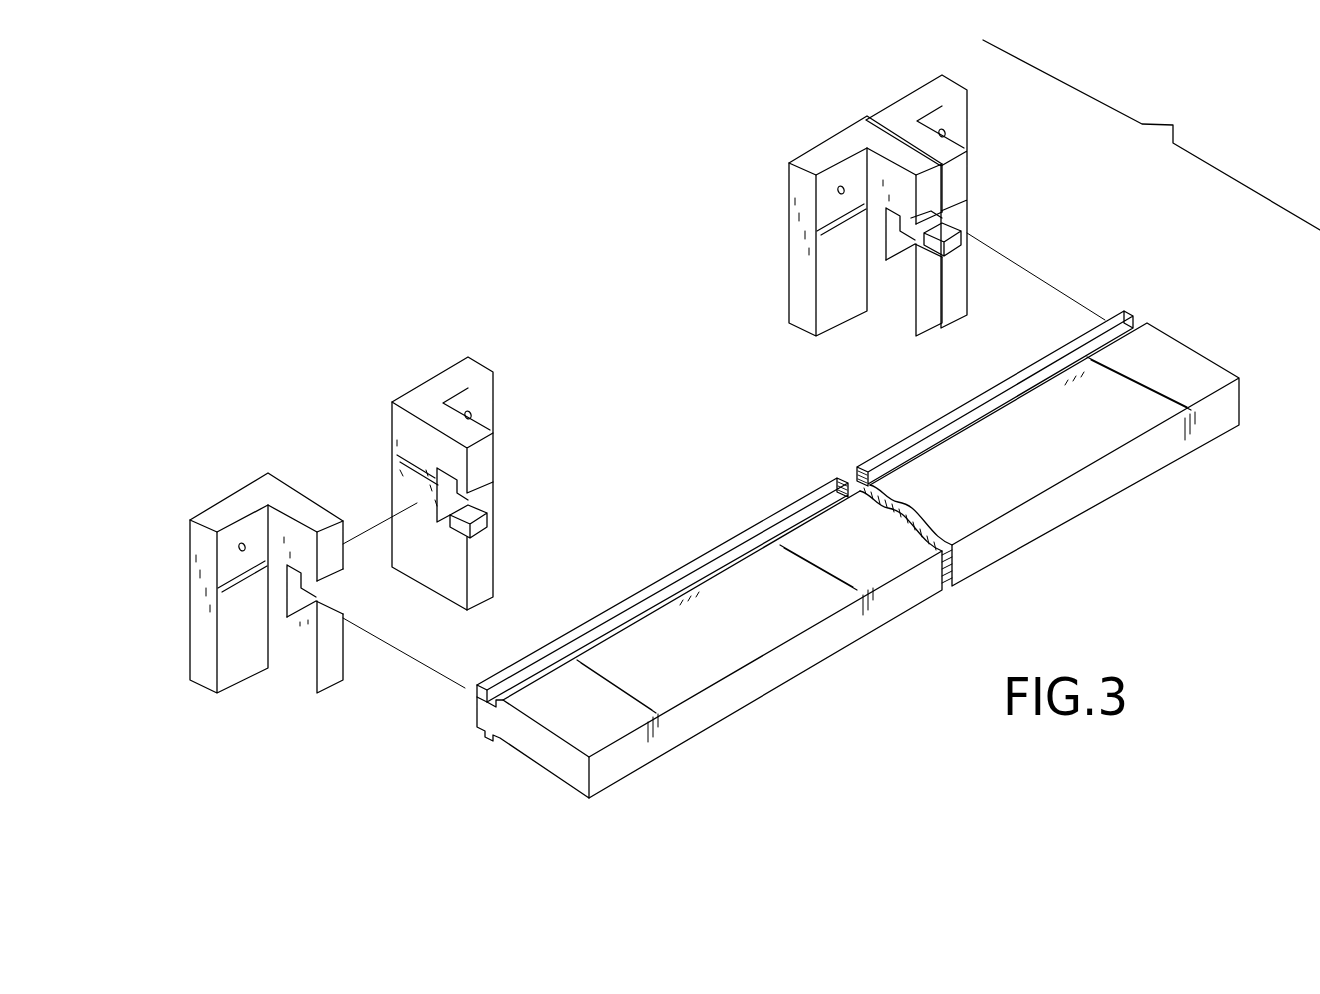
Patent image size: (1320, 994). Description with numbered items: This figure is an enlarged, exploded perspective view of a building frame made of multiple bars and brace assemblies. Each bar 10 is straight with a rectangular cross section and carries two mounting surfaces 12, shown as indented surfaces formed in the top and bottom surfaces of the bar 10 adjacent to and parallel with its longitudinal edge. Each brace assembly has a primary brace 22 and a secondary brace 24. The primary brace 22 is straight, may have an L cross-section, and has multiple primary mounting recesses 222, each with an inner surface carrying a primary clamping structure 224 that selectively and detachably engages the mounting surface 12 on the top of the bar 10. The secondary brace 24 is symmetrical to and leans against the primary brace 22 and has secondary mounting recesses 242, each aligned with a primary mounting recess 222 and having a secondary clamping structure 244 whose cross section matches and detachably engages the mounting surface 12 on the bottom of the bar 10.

The bar 10 is at (797, 670).
The mounting surface 12 is at (740, 558).
The primary brace 22 is at (554, 423).
The secondary brace 24 is at (672, 334).
The primary mounting recess 222 is at (315, 625).
The primary clamping structure 224 is at (323, 587).
The secondary mounting recess 242 is at (462, 491).
The secondary clamping structure 244 is at (475, 503).